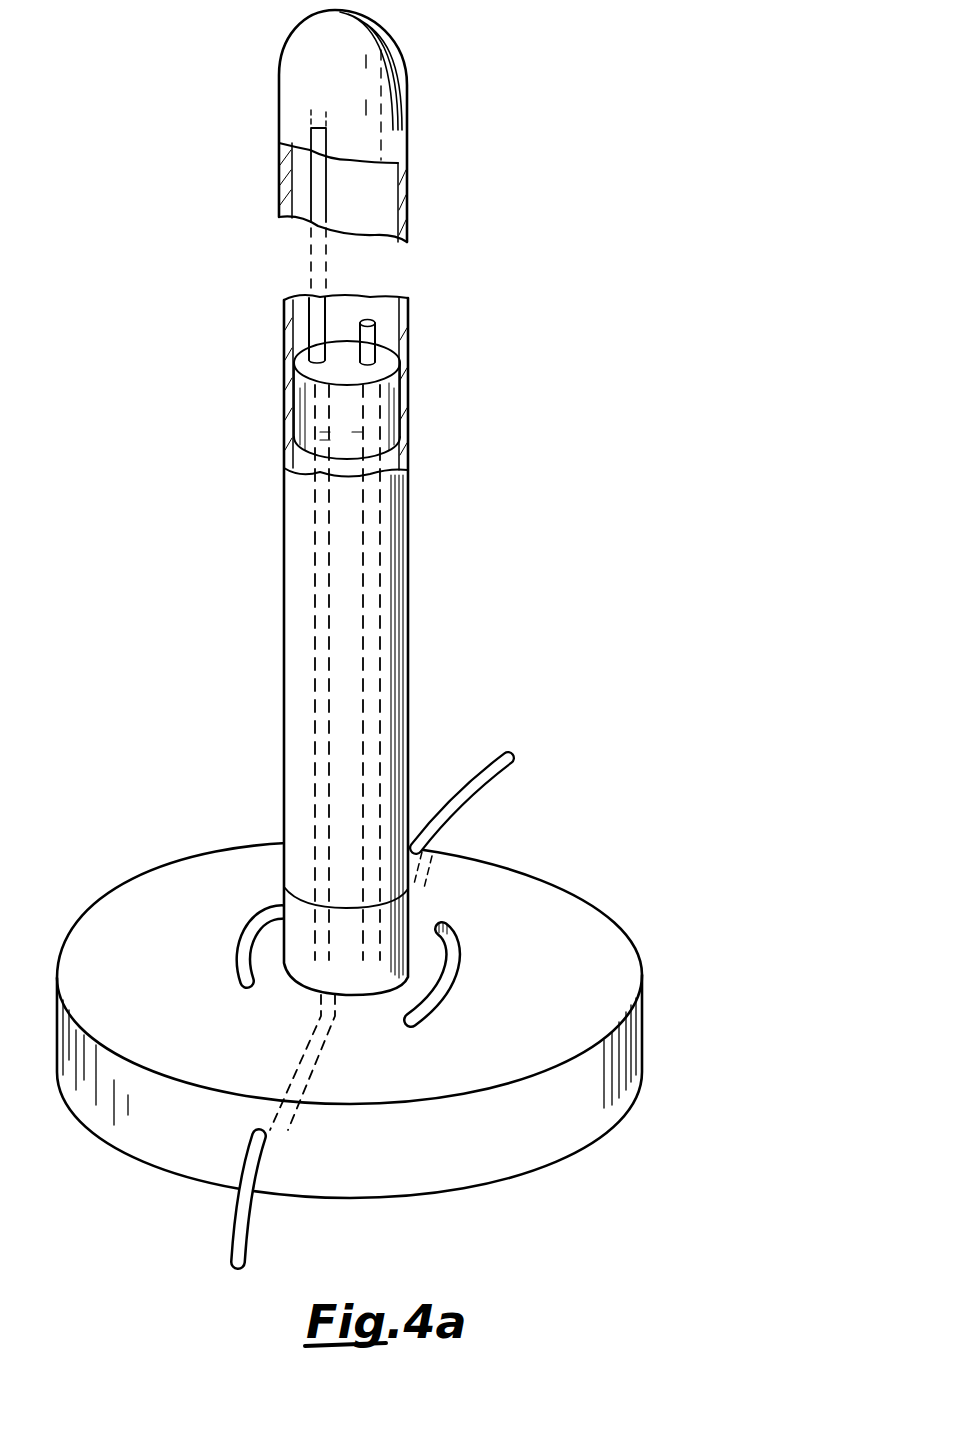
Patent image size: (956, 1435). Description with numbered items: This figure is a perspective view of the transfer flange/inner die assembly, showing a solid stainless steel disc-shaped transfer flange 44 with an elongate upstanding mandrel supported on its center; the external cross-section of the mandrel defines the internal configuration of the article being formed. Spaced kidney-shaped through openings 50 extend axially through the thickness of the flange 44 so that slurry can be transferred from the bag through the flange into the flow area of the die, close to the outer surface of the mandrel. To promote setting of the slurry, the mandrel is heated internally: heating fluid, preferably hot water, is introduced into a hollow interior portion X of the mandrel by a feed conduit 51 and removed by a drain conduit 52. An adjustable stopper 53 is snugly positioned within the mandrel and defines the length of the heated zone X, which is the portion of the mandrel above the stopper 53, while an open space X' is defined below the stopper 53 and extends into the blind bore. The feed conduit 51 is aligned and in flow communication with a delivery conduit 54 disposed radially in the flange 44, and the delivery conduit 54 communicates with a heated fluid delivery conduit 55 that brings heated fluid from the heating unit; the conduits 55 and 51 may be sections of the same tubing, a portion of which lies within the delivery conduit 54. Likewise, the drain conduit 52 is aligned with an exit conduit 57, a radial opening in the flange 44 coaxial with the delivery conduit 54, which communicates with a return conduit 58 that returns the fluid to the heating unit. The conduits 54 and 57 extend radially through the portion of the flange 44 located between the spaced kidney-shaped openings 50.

The transfer flange 44 is at (628, 1030).
The kidney-shaped through openings 50 is at (240, 956).
The feed conduit 51 is at (309, 313).
The drain conduit 52 is at (380, 333).
The adjustable stopper 53 is at (385, 418).
The delivery conduit 54 is at (290, 1068).
The heated fluid delivery conduit 55 is at (228, 1210).
The exit conduit 57 is at (418, 878).
The return conduit 58 is at (478, 790).
The hollow interior portion X is at (409, 306).
The open space X' is at (431, 484).